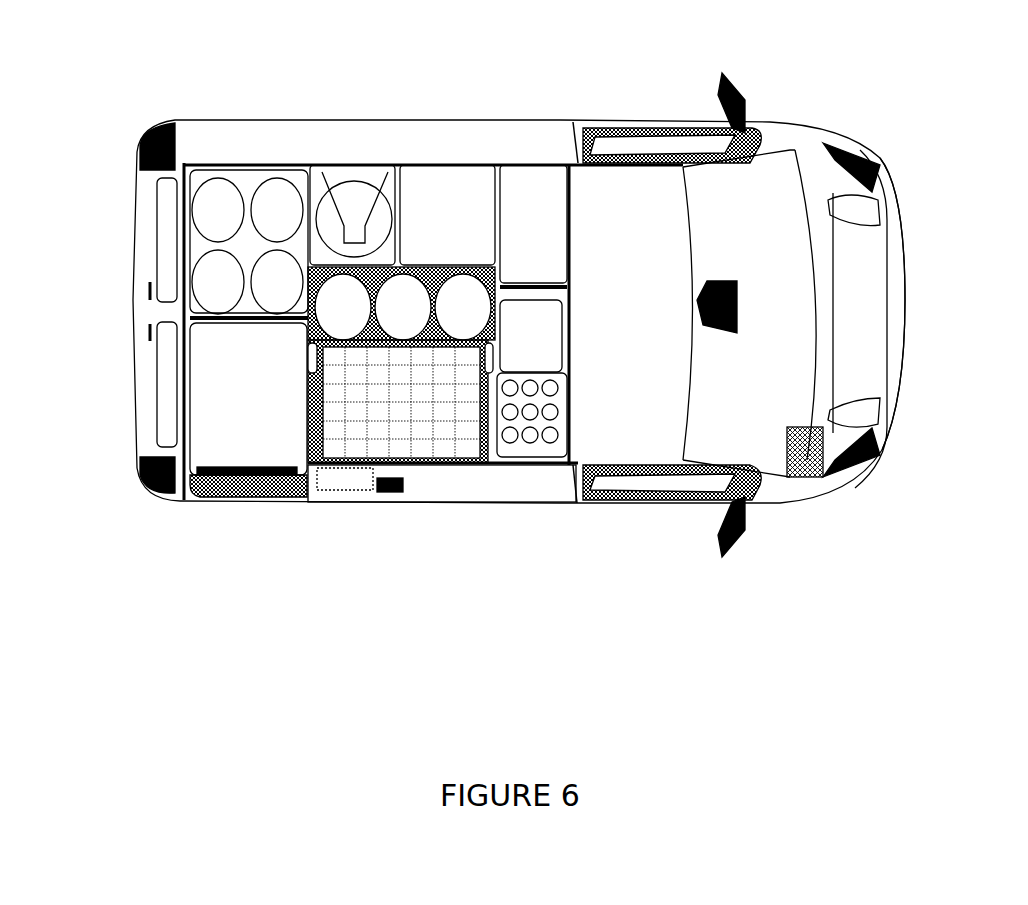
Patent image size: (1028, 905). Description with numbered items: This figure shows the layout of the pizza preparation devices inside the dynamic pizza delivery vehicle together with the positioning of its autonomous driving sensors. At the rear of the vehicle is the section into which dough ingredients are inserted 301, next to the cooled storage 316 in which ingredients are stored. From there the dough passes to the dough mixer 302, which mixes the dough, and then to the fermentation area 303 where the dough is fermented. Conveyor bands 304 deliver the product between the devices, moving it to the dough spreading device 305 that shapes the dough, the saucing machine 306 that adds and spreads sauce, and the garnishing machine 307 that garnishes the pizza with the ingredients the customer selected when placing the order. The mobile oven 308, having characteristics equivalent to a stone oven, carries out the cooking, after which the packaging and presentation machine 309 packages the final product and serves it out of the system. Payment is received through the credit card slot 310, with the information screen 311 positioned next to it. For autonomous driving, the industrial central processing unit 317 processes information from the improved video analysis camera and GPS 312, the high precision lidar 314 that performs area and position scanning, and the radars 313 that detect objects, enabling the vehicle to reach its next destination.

The section into which dough ingredients are inserted 301 is at (247, 245).
The dough mixer 302 is at (355, 222).
The fermentation area 303 is at (445, 225).
The conveyor band 304 is at (310, 305).
The dough spreading device 305 is at (531, 225).
The saucing machine 306 is at (550, 410).
The garnishing machine 307 is at (521, 440).
The mobile oven 308 is at (416, 430).
The packaging and presentation machine 309 is at (250, 392).
The credit card slot 310 is at (378, 492).
The information screen 311 is at (336, 490).
The improved video analysis camera and GPS 312 is at (740, 330).
The radar 313 is at (888, 305).
The lidar 314 is at (903, 275).
The cooled storage 316 is at (185, 306).
The industrial central processing unit 317 is at (814, 462).